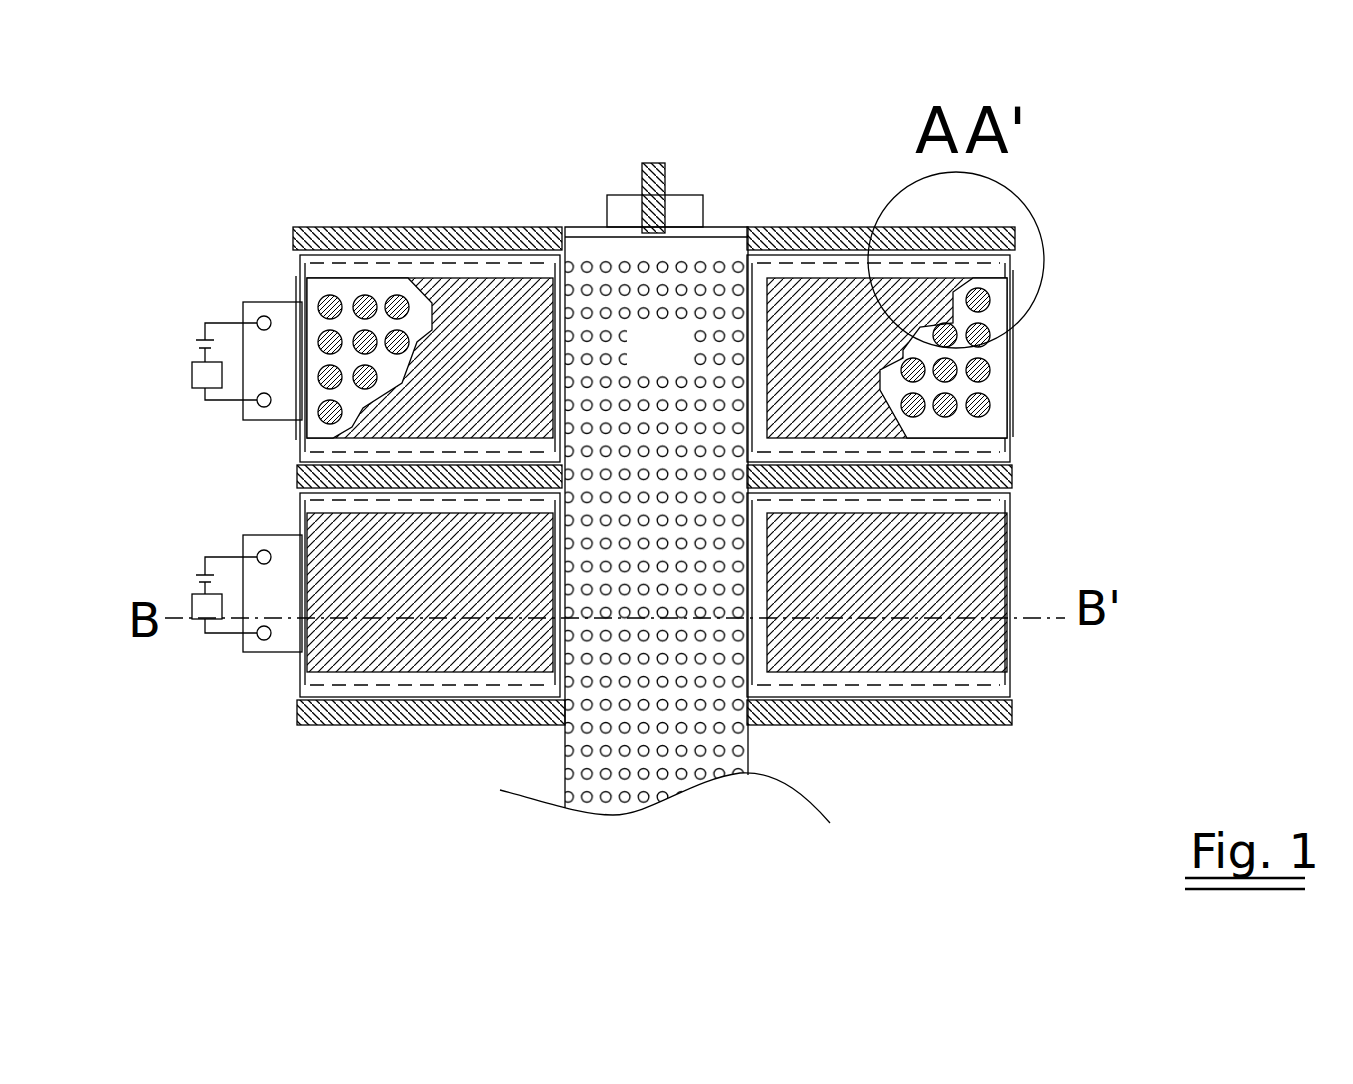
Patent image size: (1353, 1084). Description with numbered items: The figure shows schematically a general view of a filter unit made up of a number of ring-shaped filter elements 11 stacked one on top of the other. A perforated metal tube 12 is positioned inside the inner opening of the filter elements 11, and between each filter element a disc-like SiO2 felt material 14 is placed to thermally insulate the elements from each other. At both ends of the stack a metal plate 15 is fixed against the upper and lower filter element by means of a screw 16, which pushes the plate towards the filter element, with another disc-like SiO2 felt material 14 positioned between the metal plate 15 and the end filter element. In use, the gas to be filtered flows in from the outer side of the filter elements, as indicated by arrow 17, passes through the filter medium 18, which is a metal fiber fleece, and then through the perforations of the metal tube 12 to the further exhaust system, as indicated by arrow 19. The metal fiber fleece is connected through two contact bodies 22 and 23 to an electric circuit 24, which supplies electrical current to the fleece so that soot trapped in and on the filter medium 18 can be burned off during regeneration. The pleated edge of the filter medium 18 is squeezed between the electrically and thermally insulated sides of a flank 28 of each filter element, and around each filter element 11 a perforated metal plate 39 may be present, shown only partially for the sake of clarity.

The filter element 11 is at (1154, 253).
The perforated metal tube 12 is at (750, 762).
The disc-like SiO2 felt material 14 is at (1007, 224).
The metal plate 15 is at (736, 223).
The screw 16 is at (683, 208).
The arrow 17 is at (1118, 290).
The filter medium 18 is at (953, 403).
The arrow 19 is at (645, 828).
The contact body 22 is at (263, 316).
The contact body 23 is at (262, 407).
The electric circuit 24 is at (166, 355).
The flank 28 is at (1021, 252).
The perforated metal plate 39 is at (350, 300).